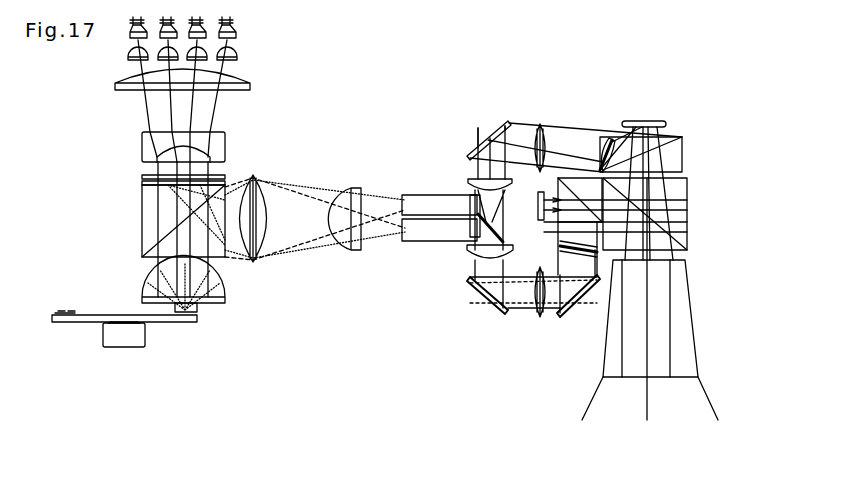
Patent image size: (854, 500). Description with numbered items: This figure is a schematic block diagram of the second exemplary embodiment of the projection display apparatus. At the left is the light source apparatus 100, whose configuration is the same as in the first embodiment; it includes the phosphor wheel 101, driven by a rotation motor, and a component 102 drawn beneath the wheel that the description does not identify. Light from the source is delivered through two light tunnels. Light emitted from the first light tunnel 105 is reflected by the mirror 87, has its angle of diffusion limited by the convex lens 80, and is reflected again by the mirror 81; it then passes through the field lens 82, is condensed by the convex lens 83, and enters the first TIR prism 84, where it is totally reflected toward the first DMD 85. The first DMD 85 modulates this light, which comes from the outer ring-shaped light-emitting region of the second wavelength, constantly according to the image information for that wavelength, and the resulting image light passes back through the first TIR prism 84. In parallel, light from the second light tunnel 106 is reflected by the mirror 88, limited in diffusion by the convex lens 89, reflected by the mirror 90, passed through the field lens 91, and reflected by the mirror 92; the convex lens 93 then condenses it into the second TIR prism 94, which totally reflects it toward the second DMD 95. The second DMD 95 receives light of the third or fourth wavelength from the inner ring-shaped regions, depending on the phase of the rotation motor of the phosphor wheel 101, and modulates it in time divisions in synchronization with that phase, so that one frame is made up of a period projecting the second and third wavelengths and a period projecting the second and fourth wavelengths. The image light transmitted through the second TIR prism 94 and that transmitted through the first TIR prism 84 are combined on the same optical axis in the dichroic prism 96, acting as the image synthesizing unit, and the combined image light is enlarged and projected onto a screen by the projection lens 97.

The light source apparatus 100 is at (300, 68).
The phosphor wheel 101 is at (164, 325).
The drive unit 102 is at (128, 347).
The first light tunnel 105 is at (425, 201).
The second light tunnel 106 is at (425, 236).
The convex lens 80 is at (470, 179).
The mirror 81 is at (500, 124).
The field lens 82 is at (540, 124).
The convex lens 83 is at (605, 157).
The first TIR prism 84 is at (680, 140).
The first DMD 85 is at (646, 122).
The mirror 87 is at (469, 152).
The mirror 88 is at (505, 238).
The convex lens 89 is at (468, 260).
The mirror 90 is at (482, 298).
The field lens 91 is at (516, 322).
The mirror 92 is at (540, 320).
The convex lens 93 is at (578, 308).
The second TIR prism 94 is at (582, 190).
The second DMD 95 is at (543, 192).
The dichroic prism 96 is at (682, 195).
The projection lens 97 is at (683, 300).